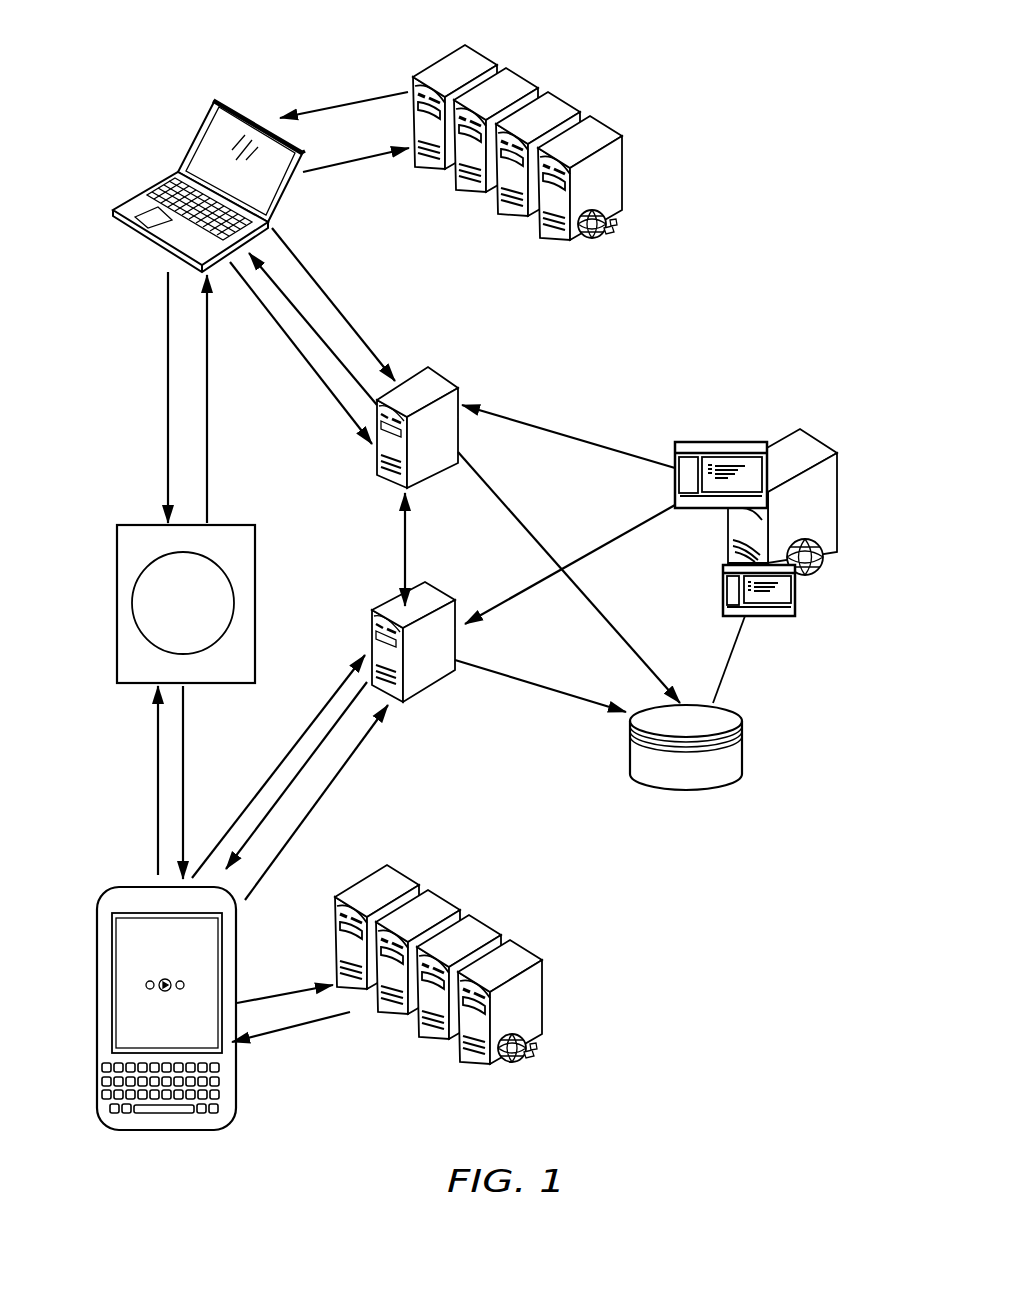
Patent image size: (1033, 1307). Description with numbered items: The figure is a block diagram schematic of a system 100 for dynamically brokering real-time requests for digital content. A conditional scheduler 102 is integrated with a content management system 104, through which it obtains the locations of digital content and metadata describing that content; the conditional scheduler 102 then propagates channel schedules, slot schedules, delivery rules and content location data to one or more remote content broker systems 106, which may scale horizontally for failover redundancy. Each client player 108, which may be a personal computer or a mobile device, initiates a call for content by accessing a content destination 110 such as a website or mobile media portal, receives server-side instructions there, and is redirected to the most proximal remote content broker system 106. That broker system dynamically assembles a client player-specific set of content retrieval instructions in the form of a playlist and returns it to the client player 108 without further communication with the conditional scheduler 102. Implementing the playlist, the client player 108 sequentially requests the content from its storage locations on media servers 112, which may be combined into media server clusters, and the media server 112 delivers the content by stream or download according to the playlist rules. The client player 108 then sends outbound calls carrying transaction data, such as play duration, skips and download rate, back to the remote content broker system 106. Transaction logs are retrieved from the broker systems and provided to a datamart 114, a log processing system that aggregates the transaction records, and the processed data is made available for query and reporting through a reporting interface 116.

The system 100 is at (268, 60).
The conditional scheduler 102 is at (718, 442).
The content management system 104 is at (823, 508).
The remote content broker system 106 is at (432, 378).
The client player 108 is at (215, 134).
The content destination 110 is at (128, 540).
The media server 112 is at (480, 63).
The datamart 114 is at (730, 765).
The reporting interface 116 is at (723, 580).